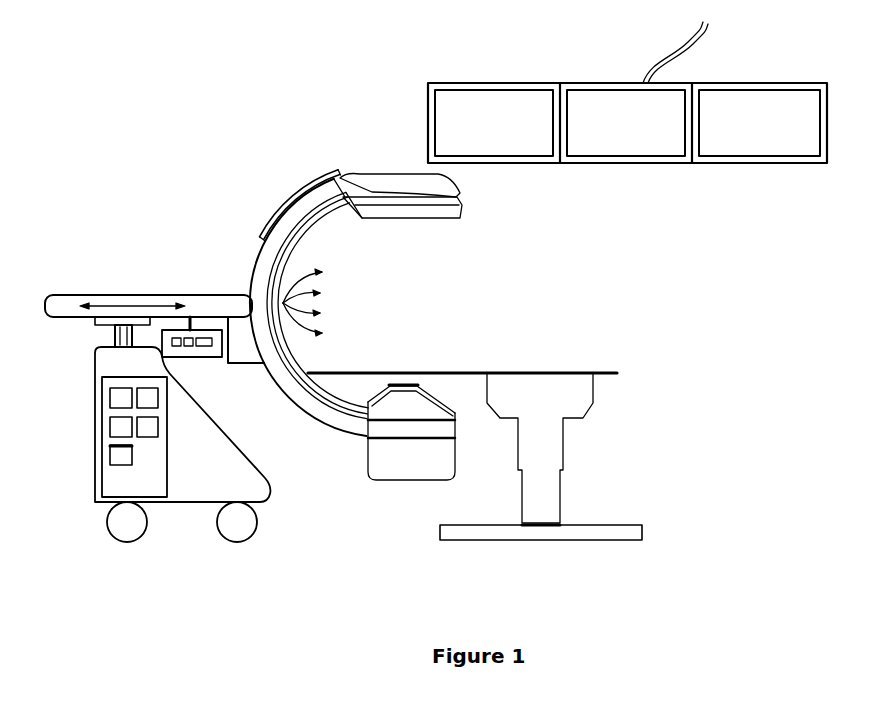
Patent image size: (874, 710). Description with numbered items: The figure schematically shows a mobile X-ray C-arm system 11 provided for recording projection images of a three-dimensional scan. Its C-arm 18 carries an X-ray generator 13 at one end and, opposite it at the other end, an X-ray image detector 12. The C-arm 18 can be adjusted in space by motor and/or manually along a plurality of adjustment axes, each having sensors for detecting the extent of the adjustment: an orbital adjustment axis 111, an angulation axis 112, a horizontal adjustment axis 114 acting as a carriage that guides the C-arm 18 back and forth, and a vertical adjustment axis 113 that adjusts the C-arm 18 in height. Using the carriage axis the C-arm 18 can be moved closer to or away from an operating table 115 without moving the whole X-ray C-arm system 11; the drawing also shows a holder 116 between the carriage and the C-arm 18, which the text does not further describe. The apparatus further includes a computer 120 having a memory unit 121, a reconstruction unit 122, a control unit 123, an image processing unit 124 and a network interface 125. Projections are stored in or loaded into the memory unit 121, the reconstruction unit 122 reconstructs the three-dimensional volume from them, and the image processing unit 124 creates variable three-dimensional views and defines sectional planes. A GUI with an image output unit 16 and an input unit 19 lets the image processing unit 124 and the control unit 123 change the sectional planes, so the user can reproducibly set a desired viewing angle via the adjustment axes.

The X-ray C-arm system 11 is at (306, 160).
The X-ray image detector 12 is at (440, 221).
The X-ray generator 13 is at (398, 460).
The image output unit 16 is at (428, 88).
The C-arm 18 is at (261, 242).
The input unit 19 is at (190, 358).
The orbital adjustment axis 111 is at (330, 274).
The angulation axis 112 is at (335, 322).
The vertical adjustment axis 113 is at (113, 334).
The adjustment axis (carriage) 114 is at (130, 294).
The operating table 115 is at (603, 404).
The C-arm holder bracket 116 is at (243, 294).
The computer 120 is at (120, 479).
The memory unit 121 is at (118, 430).
The reconstruction unit 122 is at (116, 397).
The control unit 123 is at (166, 395).
The image processing unit 124 is at (170, 422).
The network interface 125 is at (118, 457).